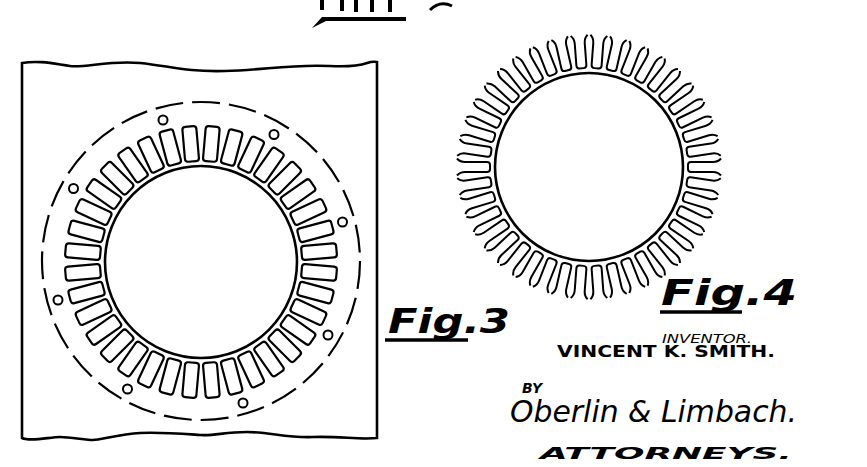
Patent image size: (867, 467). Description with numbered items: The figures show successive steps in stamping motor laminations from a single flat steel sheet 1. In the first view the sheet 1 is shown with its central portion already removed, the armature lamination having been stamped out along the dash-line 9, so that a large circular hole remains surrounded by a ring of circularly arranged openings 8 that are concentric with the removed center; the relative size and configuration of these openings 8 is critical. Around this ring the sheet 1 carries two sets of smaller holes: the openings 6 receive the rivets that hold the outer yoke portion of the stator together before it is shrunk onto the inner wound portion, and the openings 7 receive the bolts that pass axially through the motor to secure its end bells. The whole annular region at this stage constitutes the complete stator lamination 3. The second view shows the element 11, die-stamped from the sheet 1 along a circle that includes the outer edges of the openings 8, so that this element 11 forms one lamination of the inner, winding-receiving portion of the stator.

In FIG. 3, the sheet 1 is at (352, 423).
In FIG. 3, the stator lamination 3 is at (250, 124).
In FIG. 3, the openings 6 is at (203, 262).
In FIG. 3, the openings 7 is at (201, 268).
In FIG. 3, the openings 8 is at (213, 165).
In FIG. 4, the openings 8 is at (638, 58).
In FIG. 3, the dash-line 9 is at (246, 178).
In FIG. 4, the dash-line 9 is at (656, 96).
In FIG. 4, the element 11 is at (718, 98).